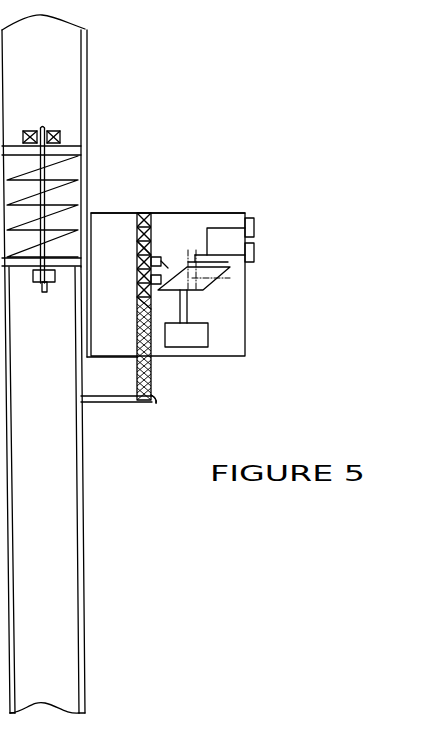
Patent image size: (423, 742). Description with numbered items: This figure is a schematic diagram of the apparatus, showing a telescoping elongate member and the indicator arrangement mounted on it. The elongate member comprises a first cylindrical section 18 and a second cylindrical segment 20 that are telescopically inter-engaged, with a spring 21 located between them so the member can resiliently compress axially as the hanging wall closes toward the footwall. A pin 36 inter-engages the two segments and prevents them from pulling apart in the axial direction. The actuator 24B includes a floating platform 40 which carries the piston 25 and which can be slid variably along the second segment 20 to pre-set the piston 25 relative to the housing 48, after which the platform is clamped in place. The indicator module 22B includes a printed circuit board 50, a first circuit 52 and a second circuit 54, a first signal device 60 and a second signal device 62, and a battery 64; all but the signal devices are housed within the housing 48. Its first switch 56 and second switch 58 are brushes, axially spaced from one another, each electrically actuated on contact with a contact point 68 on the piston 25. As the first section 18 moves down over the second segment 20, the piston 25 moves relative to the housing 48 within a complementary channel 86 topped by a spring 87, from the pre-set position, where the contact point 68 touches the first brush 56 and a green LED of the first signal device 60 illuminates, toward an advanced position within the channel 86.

The first cylindrical section 18 is at (88, 67).
The second cylindrical segment 20 is at (85, 590).
The spring 21 is at (58, 183).
The pin 36 is at (62, 147).
The floating platform 40 is at (98, 403).
The housing 48 is at (240, 342).
The printed circuit board 50 is at (208, 273).
The first circuit 52 is at (188, 288).
The second circuit 54 is at (222, 268).
The first switch 56 is at (137, 280).
The second switch 58 is at (137, 246).
The first signal device 60 is at (256, 252).
The second signal device 62 is at (256, 223).
The battery 64 is at (188, 340).
The contact point 68 is at (137, 301).
The channel 86 is at (152, 216).
The spring 87 is at (141, 212).
The indicator module 22B is at (197, 183).
The actuator 24B is at (164, 388).
The piston 25 is at (153, 405).